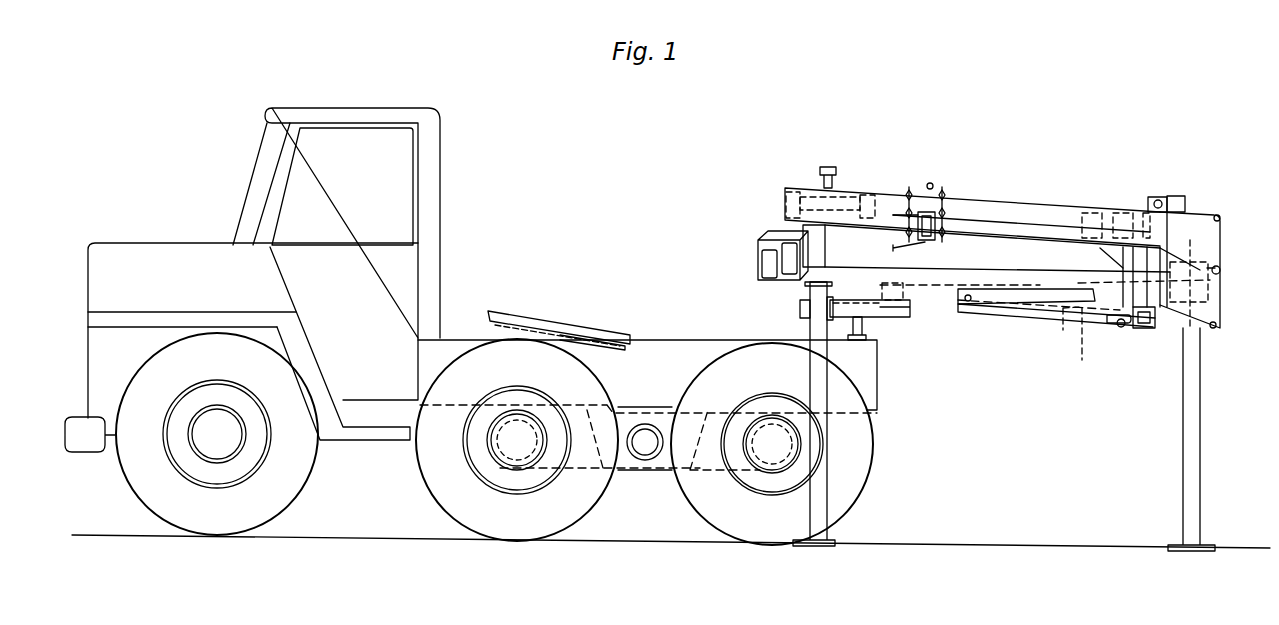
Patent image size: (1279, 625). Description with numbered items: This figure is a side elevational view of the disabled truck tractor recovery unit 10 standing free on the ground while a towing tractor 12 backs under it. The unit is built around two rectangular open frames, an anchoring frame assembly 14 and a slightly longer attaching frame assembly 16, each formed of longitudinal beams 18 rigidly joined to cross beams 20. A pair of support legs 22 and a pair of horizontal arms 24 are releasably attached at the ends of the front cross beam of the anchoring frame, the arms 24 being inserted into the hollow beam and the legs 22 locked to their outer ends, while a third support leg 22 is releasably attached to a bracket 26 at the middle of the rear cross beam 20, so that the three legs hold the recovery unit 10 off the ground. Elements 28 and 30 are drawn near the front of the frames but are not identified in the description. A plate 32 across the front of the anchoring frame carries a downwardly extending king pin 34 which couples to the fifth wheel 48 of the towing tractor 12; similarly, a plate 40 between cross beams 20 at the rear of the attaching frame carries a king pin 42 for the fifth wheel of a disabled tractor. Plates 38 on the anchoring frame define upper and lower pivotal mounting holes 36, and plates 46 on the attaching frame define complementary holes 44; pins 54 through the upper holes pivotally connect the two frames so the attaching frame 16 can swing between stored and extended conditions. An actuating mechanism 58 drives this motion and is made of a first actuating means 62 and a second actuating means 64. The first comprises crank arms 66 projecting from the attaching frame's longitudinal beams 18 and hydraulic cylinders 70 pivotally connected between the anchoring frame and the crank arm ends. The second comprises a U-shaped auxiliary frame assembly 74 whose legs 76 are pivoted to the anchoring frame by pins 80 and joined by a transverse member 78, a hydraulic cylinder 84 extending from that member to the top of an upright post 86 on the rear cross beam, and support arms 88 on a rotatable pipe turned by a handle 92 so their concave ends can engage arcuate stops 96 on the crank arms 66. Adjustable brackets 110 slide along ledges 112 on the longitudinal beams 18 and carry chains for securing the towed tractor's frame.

The disabled truck tractor recovery unit 10 is at (1107, 107).
The towing tractor 12 is at (445, 111).
The anchoring frame assembly 14 is at (936, 308).
The attaching frame assembly 16 is at (899, 190).
The longitudinal beams 18 is at (1036, 240).
The cross beams 20 is at (786, 200).
The support legs 22 is at (824, 508).
The support arms 24 is at (805, 305).
The bracket 26 is at (1202, 300).
The receiver bracket 28 is at (765, 244).
The connector block 30 is at (815, 251).
The plate 32 is at (839, 308).
The king pin 34 is at (864, 328).
The pivotal mounting holes 36 is at (1221, 271).
The plates 38 is at (1218, 308).
The plate 40 is at (840, 195).
The king pin 42 is at (823, 182).
The complementary pivotal mounting holes 44 is at (1219, 213).
The plates 46 is at (1218, 234).
The fifth wheel 48 is at (528, 316).
The pins 54 is at (1219, 266).
The actuating mechanism 58 is at (1072, 326).
The first actuating means 62 is at (1103, 258).
The second actuating means 64 is at (1127, 350).
The crank arms 66 is at (1143, 195).
The hydraulic cylinders 70 is at (917, 285).
The auxiliary frame assembly 74 is at (1040, 316).
The legs 76 is at (992, 312).
The transverse member 78 is at (1180, 334).
The pins 80 is at (969, 302).
The hydraulic cylinder 84 is at (1164, 253).
The upright post 86 is at (1185, 196).
The support arms 88 is at (1082, 358).
The handle 92 is at (1121, 329).
The arcuate stops 96 is at (1040, 285).
The adjustable brackets 110 is at (945, 194).
The ledges 112 is at (985, 214).